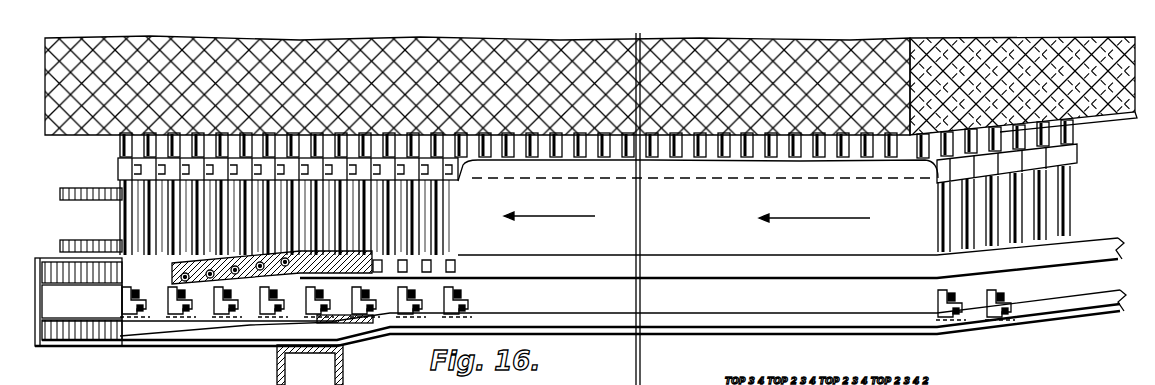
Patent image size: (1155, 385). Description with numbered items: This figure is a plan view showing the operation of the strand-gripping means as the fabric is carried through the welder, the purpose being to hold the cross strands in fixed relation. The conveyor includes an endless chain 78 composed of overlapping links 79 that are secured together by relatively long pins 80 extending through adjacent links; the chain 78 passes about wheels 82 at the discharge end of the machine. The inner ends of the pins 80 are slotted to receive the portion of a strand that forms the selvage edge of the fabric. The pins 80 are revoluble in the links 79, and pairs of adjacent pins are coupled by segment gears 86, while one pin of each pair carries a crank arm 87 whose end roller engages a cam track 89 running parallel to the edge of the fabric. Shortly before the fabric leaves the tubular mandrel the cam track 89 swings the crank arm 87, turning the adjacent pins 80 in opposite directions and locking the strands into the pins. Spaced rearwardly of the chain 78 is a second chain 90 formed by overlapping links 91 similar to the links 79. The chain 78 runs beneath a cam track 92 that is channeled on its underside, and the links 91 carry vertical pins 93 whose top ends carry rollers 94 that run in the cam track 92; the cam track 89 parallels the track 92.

The endless chain 78 is at (1072, 150).
The overlapping links 79 is at (960, 196).
The pins 80 is at (458, 190).
The wheels 82 is at (78, 184).
The segment gears 86 is at (1010, 286).
The crank arm 87 is at (935, 307).
The cam track 89 is at (783, 320).
The second chain 90 is at (439, 261).
The links 91 is at (463, 266).
The cam track 92 is at (693, 263).
The vertical pins 93 is at (225, 276).
The rollers 94 is at (258, 270).